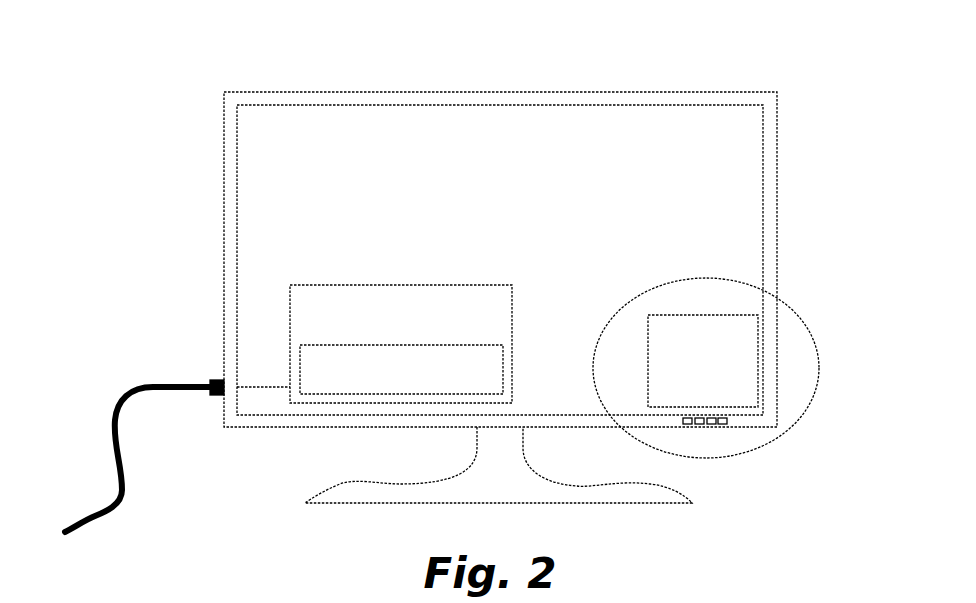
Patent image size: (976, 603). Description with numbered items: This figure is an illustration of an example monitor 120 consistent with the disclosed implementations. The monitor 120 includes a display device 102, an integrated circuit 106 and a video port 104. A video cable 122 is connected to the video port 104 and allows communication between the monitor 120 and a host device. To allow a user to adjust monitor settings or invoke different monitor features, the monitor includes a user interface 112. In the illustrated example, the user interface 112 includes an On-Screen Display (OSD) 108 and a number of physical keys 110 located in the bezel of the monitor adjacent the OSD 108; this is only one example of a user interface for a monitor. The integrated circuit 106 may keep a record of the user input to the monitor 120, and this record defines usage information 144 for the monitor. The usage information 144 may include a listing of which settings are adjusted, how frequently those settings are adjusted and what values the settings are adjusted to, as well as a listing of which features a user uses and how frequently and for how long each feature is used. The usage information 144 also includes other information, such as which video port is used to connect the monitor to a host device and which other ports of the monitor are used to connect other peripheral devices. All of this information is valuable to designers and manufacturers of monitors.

The display device 102 is at (386, 178).
The video port 104 is at (222, 382).
The integrated circuit 106 is at (401, 344).
The On-Screen Display (OSD) 108 is at (703, 361).
The physical keys 110 is at (697, 424).
The user interface 112 is at (797, 318).
The monitor 120 is at (800, 137).
The video cable 122 is at (113, 425).
The usage information 144 is at (401, 369).